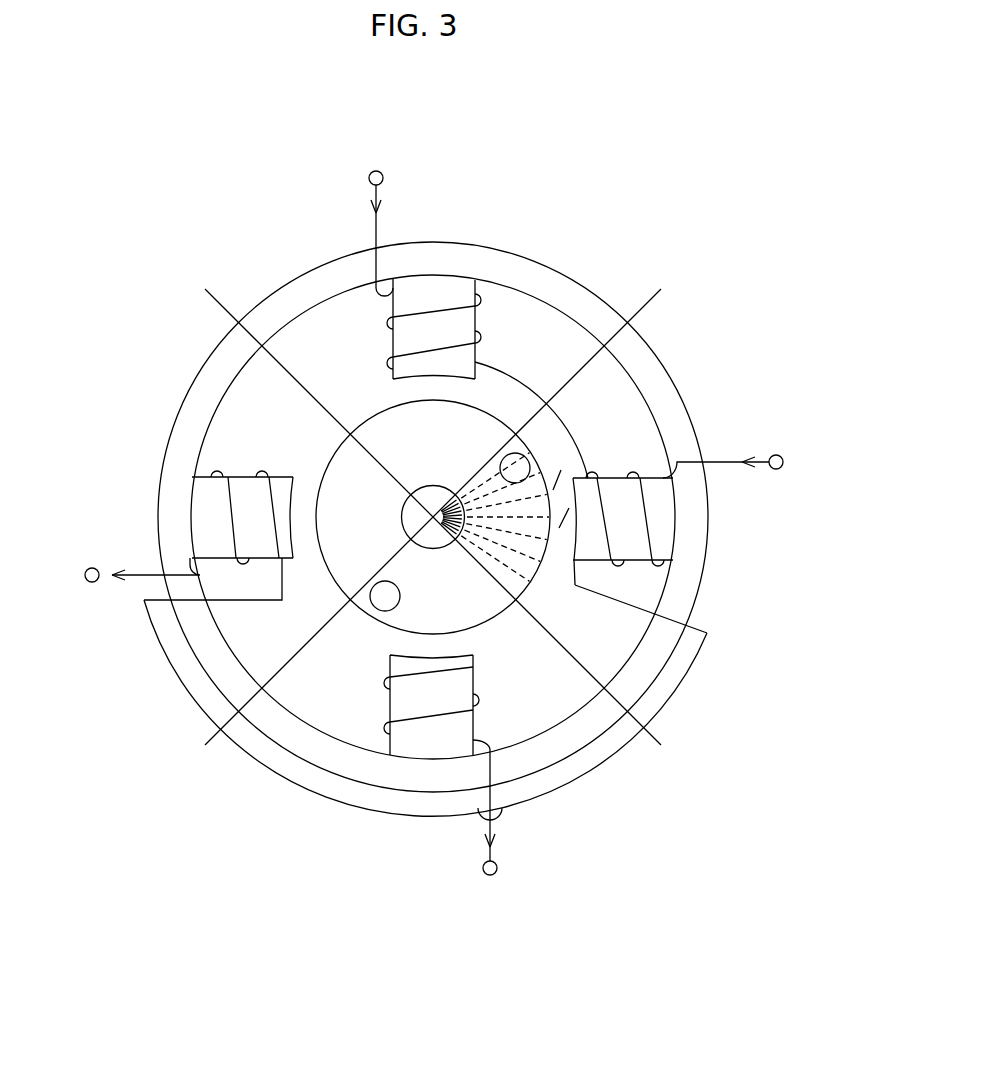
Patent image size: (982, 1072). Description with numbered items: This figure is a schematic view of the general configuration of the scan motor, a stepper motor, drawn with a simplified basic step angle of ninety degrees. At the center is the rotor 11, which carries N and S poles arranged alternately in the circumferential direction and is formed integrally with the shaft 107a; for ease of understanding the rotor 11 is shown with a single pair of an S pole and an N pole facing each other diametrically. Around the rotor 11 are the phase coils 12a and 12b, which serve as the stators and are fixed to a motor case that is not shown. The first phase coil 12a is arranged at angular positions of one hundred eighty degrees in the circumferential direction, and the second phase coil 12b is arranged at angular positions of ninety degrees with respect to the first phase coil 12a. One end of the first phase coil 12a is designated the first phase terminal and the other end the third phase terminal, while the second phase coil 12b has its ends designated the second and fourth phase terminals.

The rotor 11 is at (403, 530).
The shaft 107a is at (413, 537).
The first phase coil 12a is at (523, 378).
The second phase coil 12b is at (290, 777).